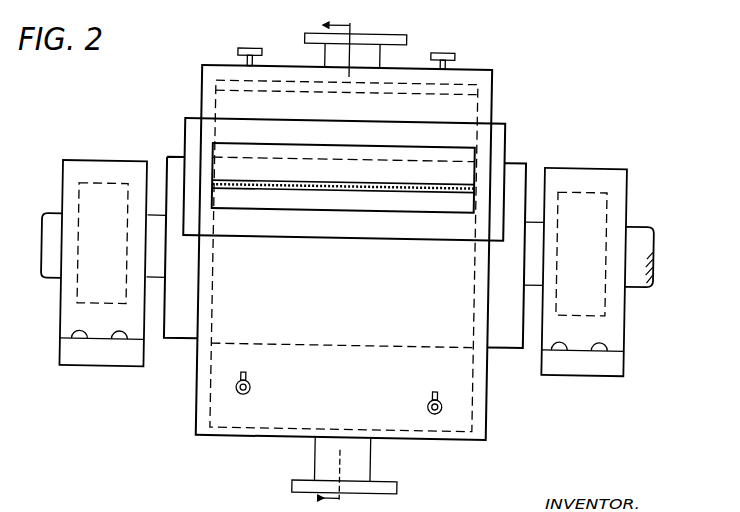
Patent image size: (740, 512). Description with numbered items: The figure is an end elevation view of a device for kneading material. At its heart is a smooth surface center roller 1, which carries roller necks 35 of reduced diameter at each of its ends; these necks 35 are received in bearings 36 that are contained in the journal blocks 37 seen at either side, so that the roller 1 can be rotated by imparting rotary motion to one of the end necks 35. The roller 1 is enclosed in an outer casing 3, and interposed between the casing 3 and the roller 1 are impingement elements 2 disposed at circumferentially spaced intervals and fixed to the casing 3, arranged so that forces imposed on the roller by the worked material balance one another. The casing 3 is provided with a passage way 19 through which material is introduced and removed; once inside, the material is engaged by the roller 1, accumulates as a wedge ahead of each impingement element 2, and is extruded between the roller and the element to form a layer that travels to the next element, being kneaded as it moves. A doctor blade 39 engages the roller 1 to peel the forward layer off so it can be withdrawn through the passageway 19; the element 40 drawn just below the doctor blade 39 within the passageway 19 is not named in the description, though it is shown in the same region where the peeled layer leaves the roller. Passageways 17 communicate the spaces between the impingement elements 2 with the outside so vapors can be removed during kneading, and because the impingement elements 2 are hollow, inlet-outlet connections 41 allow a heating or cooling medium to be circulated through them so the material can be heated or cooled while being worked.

The center roller 1 is at (508, 365).
The impingement elements 2 is at (212, 393).
The outer casing 3 is at (487, 407).
The passageways 17 is at (396, 37).
The passage way 19 is at (198, 143).
The roller necks 35 is at (52, 225).
The bearings 36 is at (112, 199).
The journal blocks 37 is at (94, 170).
The doctor blade 39 is at (456, 158).
The strip 40 is at (457, 180).
The inlet-outlet connections 41 is at (242, 50).